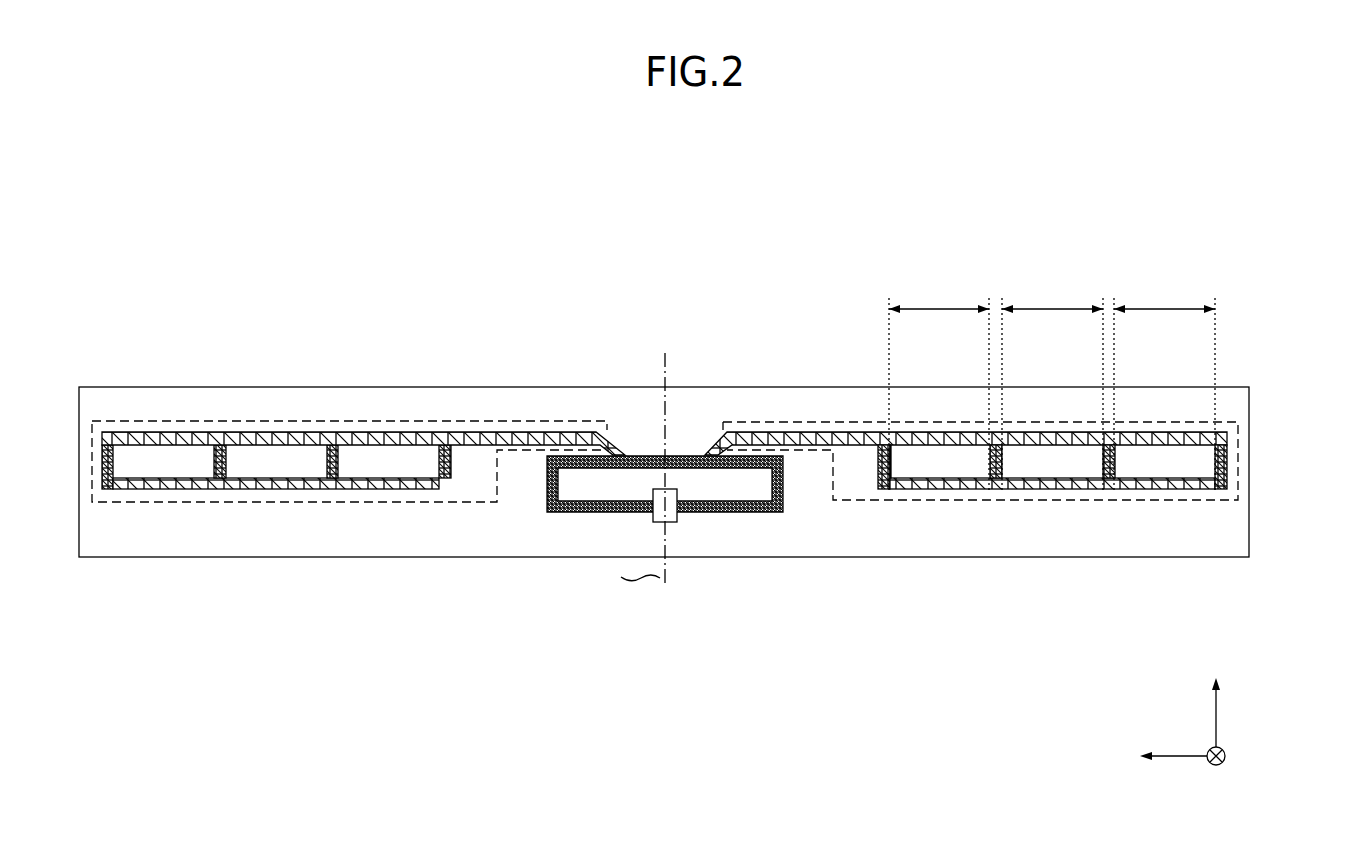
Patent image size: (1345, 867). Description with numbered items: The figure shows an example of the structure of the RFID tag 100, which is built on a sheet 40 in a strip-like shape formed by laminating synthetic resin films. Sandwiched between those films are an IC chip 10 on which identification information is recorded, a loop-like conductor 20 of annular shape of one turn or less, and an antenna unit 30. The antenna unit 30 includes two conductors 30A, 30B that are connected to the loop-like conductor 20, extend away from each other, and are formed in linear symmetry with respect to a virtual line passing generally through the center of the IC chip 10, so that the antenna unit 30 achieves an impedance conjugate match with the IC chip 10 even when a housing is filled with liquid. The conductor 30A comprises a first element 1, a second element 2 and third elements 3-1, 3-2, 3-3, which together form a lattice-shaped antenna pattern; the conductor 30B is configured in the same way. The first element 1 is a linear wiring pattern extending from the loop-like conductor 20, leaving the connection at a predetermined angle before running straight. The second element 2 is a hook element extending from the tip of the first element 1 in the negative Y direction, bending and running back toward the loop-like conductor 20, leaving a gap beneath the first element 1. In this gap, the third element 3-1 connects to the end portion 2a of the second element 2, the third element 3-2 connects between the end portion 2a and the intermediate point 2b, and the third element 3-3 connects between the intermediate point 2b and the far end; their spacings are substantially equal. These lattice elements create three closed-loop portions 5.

The RFID tag 100 is at (1148, 233).
The sheet 40 is at (1215, 545).
The first element 1 is at (1222, 435).
The second element 2 is at (1069, 530).
The end portion 2a is at (884, 490).
The intermediate point 2b is at (1062, 486).
The third element 3-1 is at (891, 462).
The third element 3-2 is at (1002, 465).
The third element 3-3 is at (1115, 465).
The closed-loop portion 5 is at (941, 455).
The IC chip 10 is at (678, 519).
The loop-like conductor 20 is at (783, 483).
The antenna unit 30 is at (597, 320).
The conductor 30A is at (720, 429).
The conductor 30B is at (608, 429).